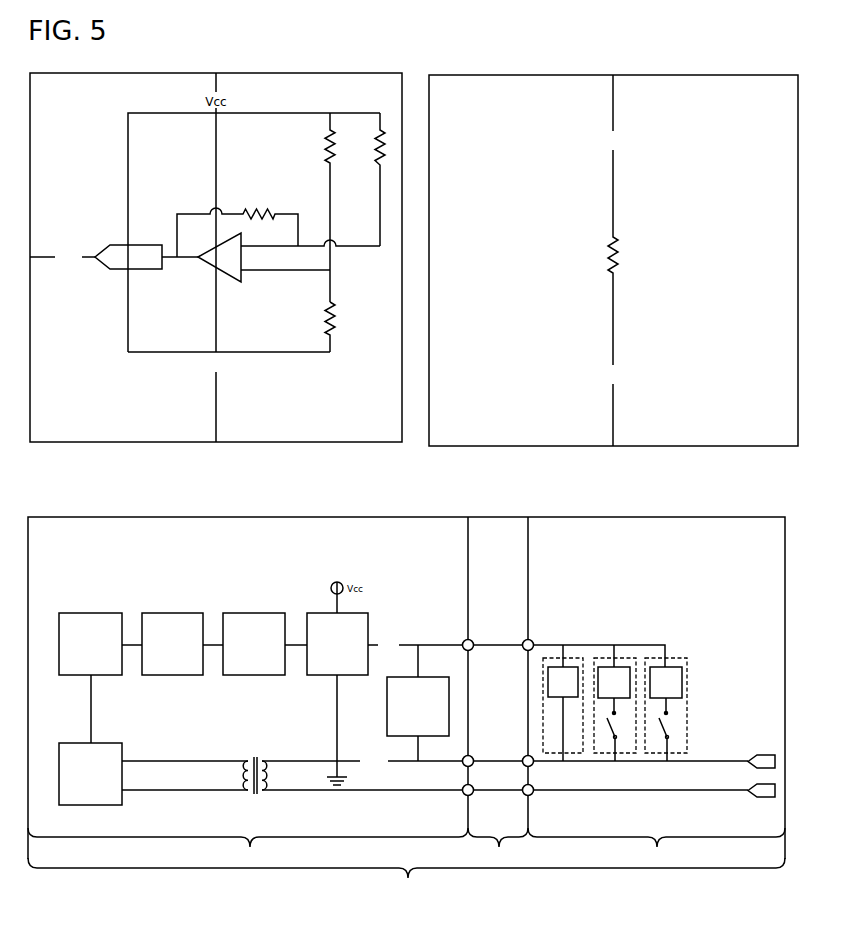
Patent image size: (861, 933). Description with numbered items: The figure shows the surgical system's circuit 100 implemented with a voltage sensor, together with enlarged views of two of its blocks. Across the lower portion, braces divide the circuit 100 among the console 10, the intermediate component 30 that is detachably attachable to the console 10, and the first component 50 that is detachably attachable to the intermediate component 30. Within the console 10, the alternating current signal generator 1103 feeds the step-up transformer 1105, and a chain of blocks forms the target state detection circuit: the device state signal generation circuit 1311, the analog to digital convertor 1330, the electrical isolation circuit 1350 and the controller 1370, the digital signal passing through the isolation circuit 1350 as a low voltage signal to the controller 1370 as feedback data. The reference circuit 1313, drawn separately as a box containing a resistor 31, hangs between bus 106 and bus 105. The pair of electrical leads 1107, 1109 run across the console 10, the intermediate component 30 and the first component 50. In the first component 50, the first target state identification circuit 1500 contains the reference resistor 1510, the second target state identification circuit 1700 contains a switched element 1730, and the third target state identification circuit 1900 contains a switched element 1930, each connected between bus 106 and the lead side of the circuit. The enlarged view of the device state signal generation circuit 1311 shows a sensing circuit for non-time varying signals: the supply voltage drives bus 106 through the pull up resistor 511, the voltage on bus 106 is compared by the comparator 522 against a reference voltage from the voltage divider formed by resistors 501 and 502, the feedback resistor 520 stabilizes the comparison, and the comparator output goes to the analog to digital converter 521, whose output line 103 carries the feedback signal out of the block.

The device state signal generation circuit 1311 is at (216, 374).
The reference circuit 1313 is at (592, 405).
The ADC output signal line 103 is at (62, 258).
The analog to digital converter 521 is at (146, 267).
The comparator 522 is at (258, 258).
The feedback resistor 520 is at (237, 225).
The resistor 501 is at (343, 207).
The pull up resistor 511 is at (389, 179).
The resistor 502 is at (344, 327).
The low-side wire 105 is at (475, 562).
The bus 106 is at (453, 376).
The shunt resistor 31 is at (604, 257).
The controller 1370 is at (100, 678).
The electrical isolation circuit 1350 is at (182, 644).
The analog to digital convertor 1330 is at (265, 644).
The alternating current signal generator 1103 is at (153, 774).
The step-up transformer 1105 is at (494, 786).
The first target state identification circuit 1500 is at (585, 655).
The reference resistor 1510 is at (563, 714).
The second target state identification circuit 1700 is at (637, 655).
The switched load 1730 is at (614, 714).
The third target state identification circuit 1900 is at (689, 655).
The switched load 1930 is at (666, 714).
The electrical lead 1107 is at (761, 770).
The electrical lead 1109 is at (761, 799).
The console 10 is at (248, 848).
The intermediate component 30 is at (498, 693).
The first component 50 is at (656, 849).
The circuit 100 is at (406, 708).